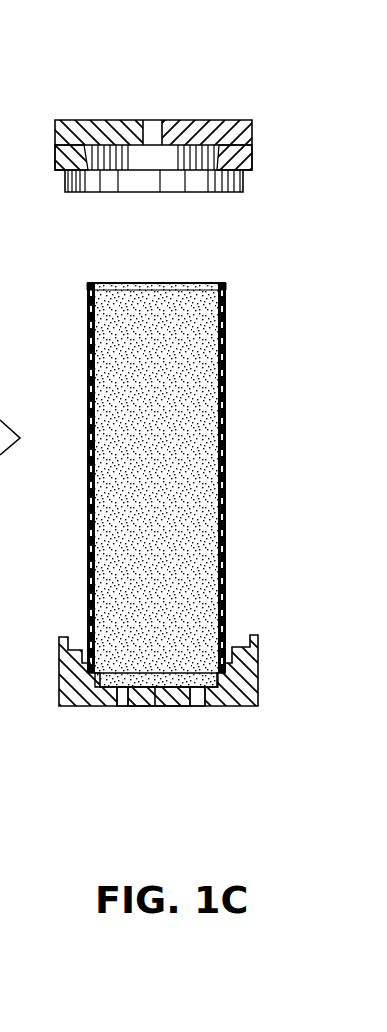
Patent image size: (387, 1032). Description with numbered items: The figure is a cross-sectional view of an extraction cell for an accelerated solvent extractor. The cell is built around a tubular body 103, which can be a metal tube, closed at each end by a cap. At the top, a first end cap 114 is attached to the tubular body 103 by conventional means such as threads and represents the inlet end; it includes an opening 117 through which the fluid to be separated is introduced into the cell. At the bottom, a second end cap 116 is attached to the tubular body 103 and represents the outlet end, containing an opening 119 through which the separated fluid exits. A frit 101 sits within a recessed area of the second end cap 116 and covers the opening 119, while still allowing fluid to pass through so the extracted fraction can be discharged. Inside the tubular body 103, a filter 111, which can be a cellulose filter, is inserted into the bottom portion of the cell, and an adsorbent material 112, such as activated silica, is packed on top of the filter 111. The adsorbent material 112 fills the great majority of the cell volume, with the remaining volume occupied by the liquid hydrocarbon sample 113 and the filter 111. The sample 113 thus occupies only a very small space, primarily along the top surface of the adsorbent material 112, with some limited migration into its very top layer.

The frit 101 is at (157, 706).
The tubular body 103 is at (225, 393).
The filter 111 is at (245, 706).
The adsorbent material 112 is at (168, 486).
The liquid hydrocarbon sample 113 is at (208, 283).
The first end cap 114 is at (102, 120).
The second end cap 116 is at (257, 658).
The opening 117 is at (153, 128).
The opening 119 is at (122, 707).